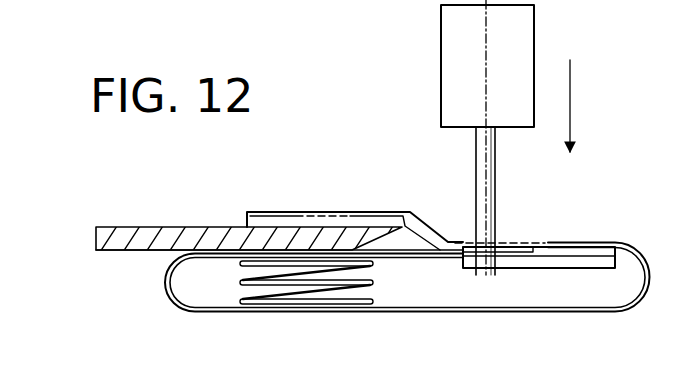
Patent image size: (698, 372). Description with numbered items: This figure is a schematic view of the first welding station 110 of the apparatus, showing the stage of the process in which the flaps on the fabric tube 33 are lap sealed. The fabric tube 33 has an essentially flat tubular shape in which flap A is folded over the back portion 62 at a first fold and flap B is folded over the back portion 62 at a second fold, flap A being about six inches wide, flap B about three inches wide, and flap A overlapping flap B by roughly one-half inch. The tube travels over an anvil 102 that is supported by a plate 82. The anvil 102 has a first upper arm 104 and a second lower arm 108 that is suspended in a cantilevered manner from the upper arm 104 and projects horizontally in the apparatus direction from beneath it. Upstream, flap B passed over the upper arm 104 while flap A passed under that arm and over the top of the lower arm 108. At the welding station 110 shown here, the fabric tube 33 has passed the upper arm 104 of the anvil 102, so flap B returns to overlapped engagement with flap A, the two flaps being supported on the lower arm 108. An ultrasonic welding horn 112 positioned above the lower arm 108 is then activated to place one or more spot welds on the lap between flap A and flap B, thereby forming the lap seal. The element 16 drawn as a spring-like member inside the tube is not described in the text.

The first welding station 110 is at (301, 102).
The ultrasonic welding horn 112 is at (516, 58).
The plate 82 is at (207, 227).
The anvil 102 is at (370, 212).
The first upper arm 104 is at (463, 243).
The second lower arm 108 is at (505, 270).
The back portion 62 is at (413, 313).
The spring 16 is at (260, 313).
The fabric tube 33 is at (168, 314).
The flap A is at (401, 258).
The flap B is at (527, 248).